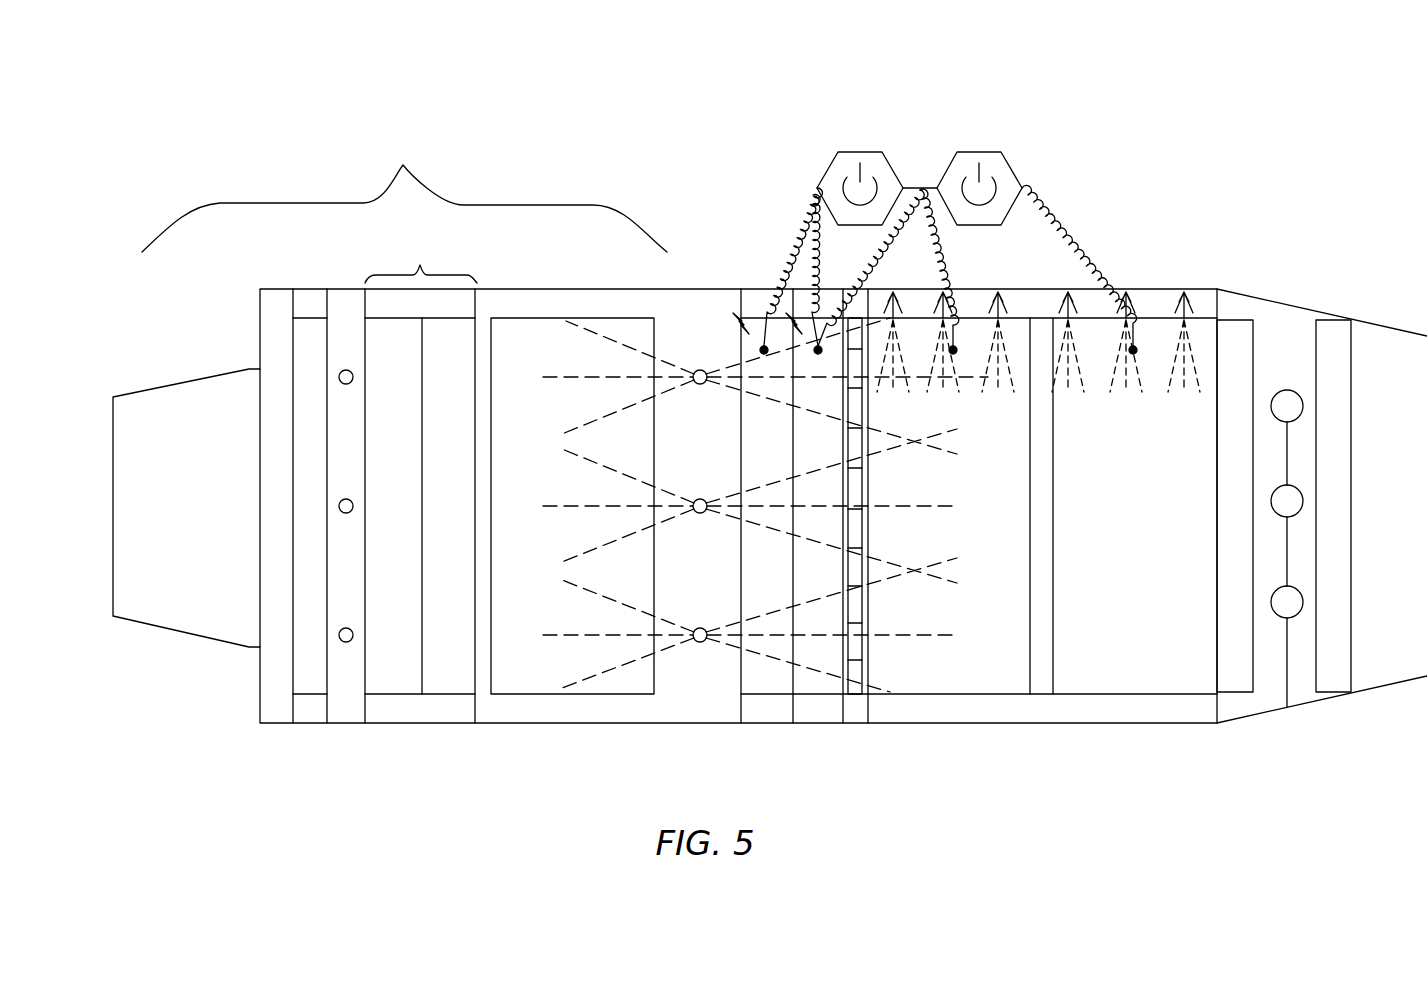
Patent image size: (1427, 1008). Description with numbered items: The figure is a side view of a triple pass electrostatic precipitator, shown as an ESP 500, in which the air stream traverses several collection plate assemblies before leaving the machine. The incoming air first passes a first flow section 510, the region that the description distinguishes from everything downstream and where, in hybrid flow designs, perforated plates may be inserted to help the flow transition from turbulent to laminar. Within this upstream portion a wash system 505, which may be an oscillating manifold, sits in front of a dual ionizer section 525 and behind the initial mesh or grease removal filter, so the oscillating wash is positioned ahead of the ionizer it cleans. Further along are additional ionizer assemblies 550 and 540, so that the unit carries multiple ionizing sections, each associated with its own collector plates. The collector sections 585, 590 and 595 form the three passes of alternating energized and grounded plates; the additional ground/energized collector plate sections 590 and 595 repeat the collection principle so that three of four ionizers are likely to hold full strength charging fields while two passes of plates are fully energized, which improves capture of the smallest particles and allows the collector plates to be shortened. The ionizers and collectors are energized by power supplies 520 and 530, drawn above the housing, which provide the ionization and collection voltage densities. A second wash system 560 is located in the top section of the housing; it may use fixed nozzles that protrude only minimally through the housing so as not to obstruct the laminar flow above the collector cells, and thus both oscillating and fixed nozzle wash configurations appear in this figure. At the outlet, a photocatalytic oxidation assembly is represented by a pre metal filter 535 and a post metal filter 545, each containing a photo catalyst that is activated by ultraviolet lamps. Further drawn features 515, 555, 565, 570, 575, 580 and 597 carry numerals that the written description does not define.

The ESP 500 is at (1179, 120).
The wash system 505 is at (340, 373).
The first flow section 510 is at (404, 195).
The inlet duct 515 is at (181, 632).
The power supply 520 is at (837, 152).
The dual ionizer section 525 is at (421, 480).
The power supply 530 is at (1003, 152).
The pre metal filter 535 is at (1235, 330).
The ionizer assembly 540 is at (770, 312).
The post metal filter 545 is at (1333, 333).
The ionizer assembly 550 is at (736, 316).
The filter stage 555 is at (445, 695).
The wash system 560 is at (1185, 289).
The screen stage 565 is at (397, 695).
The spray nozzles 570 is at (700, 370).
The inlet plate 575 is at (345, 700).
The discharge region 580 is at (800, 686).
The collector section 585 is at (536, 670).
The collector section 590 is at (978, 653).
The collector section 595 is at (1132, 653).
The segmented electrode 597 is at (855, 697).